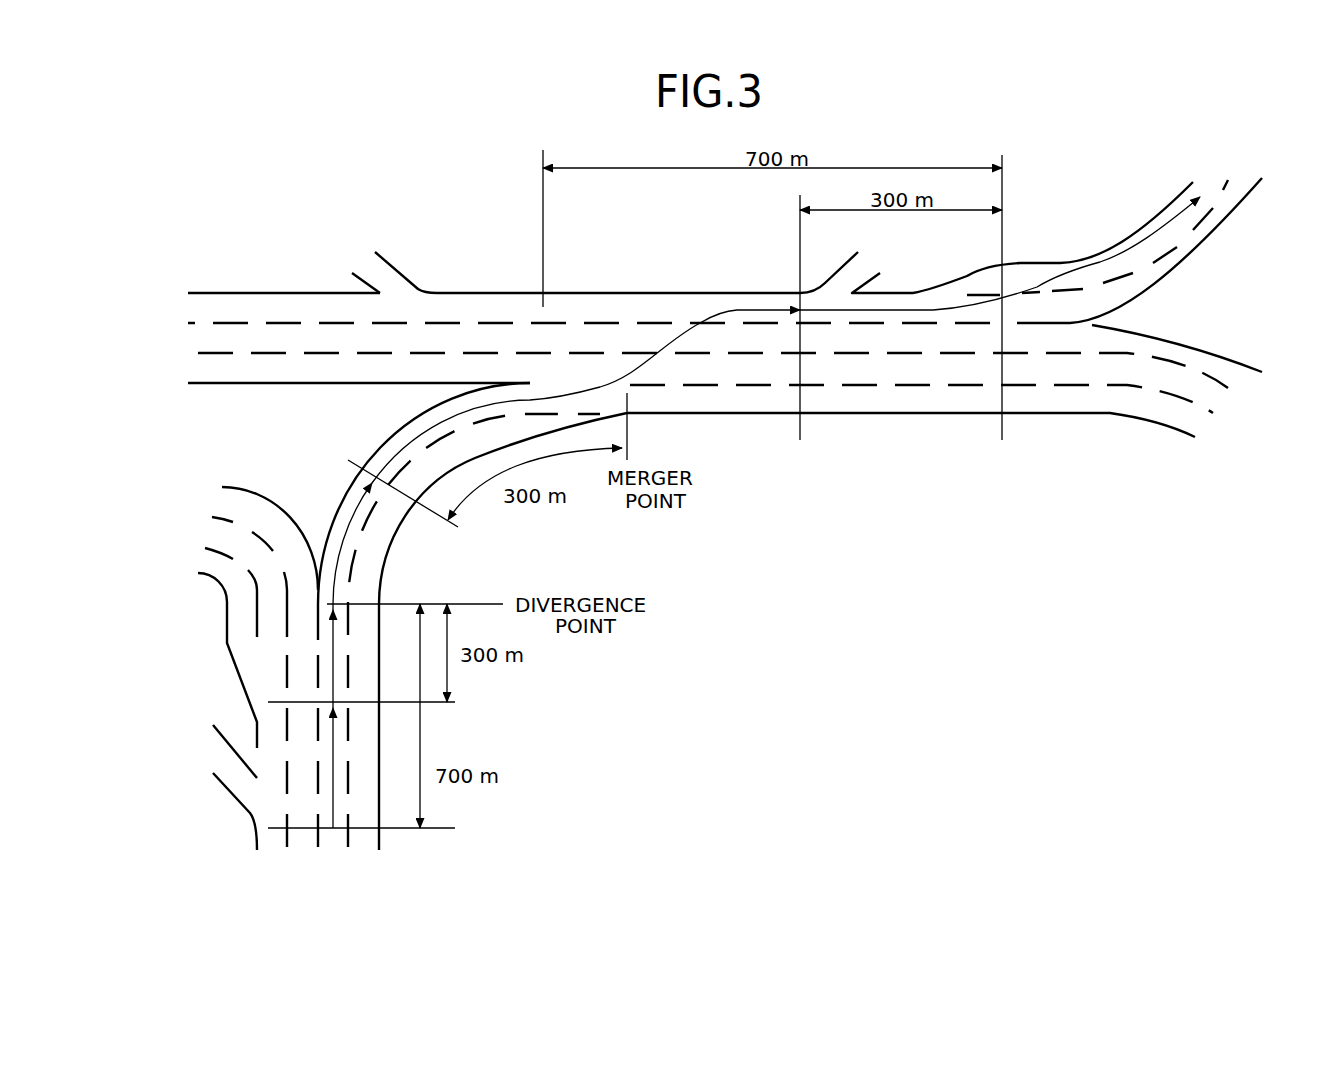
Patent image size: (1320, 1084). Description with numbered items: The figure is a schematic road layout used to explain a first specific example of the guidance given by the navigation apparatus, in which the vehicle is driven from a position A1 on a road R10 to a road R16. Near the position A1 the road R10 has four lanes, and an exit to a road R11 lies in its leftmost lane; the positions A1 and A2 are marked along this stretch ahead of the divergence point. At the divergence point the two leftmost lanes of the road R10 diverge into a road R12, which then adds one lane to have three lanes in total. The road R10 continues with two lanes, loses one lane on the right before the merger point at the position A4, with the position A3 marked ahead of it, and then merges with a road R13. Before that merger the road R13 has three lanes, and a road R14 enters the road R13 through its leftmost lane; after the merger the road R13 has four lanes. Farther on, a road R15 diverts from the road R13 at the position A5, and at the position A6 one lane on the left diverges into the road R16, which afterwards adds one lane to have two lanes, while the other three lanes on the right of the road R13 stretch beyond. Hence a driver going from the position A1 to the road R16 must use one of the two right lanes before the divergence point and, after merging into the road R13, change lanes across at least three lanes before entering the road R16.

The road R10 is at (380, 456).
The road R11 is at (212, 711).
The road R12 is at (234, 668).
The road R13 is at (672, 303).
The road R14 is at (374, 270).
The road R15 is at (856, 270).
The road R16 is at (1176, 278).
The position A1 is at (361, 812).
The position A2 is at (361, 689).
The position A3 is at (406, 493).
The position A4 is at (649, 426).
The position A5 is at (820, 317).
The position A6 is at (1022, 297).